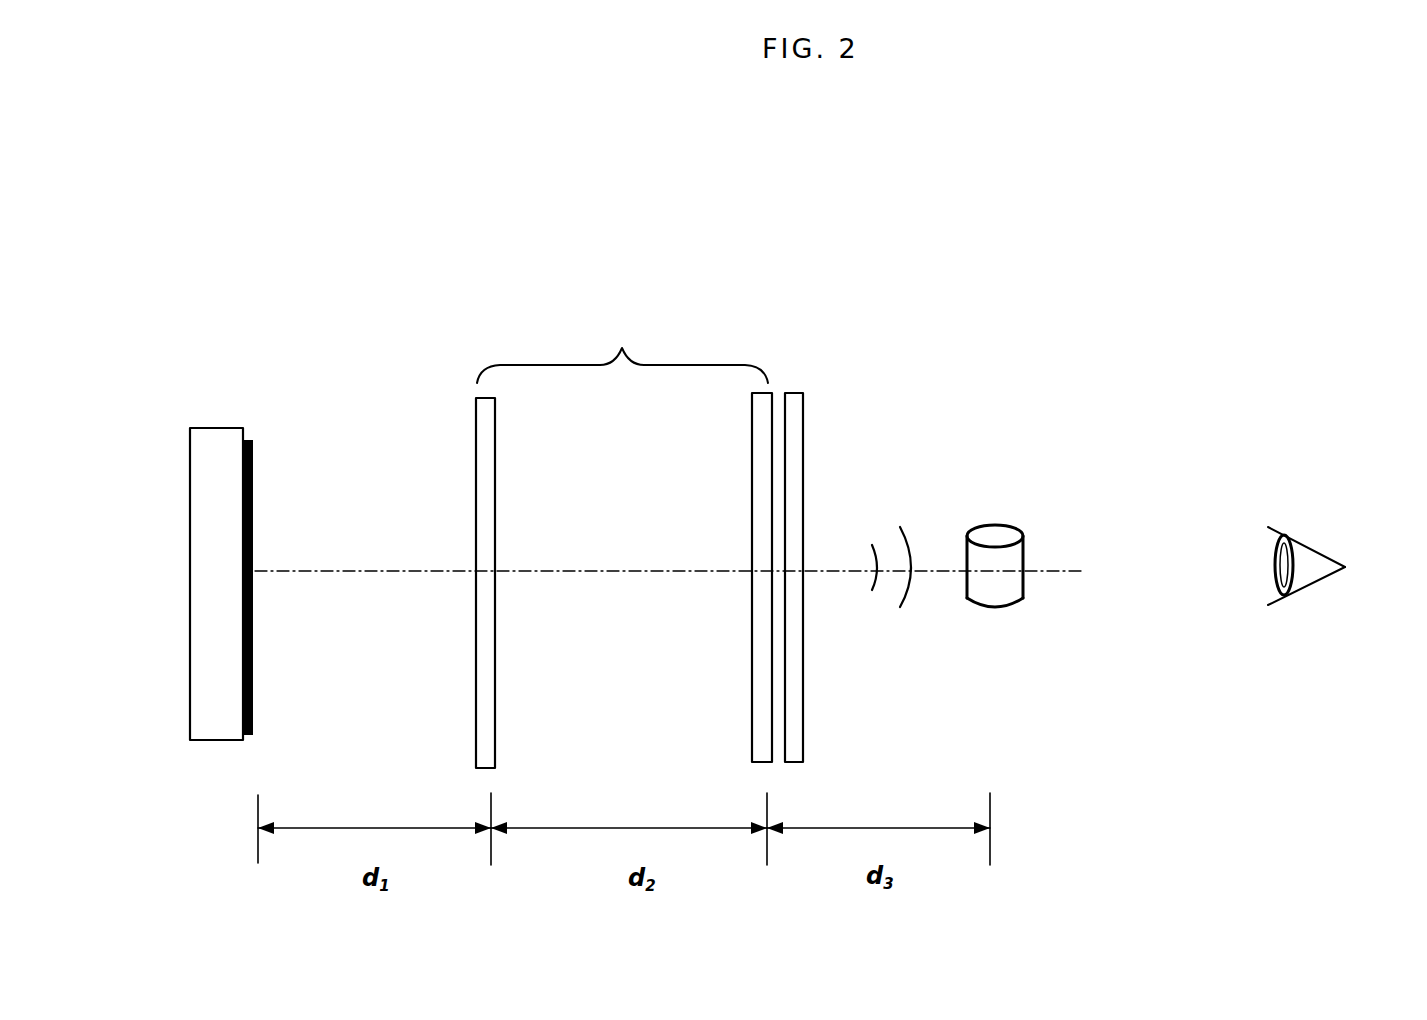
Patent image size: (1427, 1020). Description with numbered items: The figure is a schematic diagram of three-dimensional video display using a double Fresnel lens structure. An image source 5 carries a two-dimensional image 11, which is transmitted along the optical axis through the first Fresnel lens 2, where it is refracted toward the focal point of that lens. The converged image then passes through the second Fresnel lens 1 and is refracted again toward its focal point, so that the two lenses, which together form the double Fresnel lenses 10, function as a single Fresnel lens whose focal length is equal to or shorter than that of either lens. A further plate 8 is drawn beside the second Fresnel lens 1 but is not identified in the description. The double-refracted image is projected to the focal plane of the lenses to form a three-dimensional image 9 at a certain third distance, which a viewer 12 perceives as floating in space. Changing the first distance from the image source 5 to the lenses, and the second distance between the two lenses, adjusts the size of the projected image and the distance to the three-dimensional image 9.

The second Fresnel lens 1 is at (762, 615).
The first Fresnel lens 2 is at (494, 458).
The image source 5 is at (210, 583).
The plate 8 is at (800, 433).
The 3-dimensional image 9 is at (1023, 585).
The double Fresnel lenses 10 is at (622, 350).
The 2-dimensional image 11 is at (253, 503).
The viewer 12 is at (1323, 555).